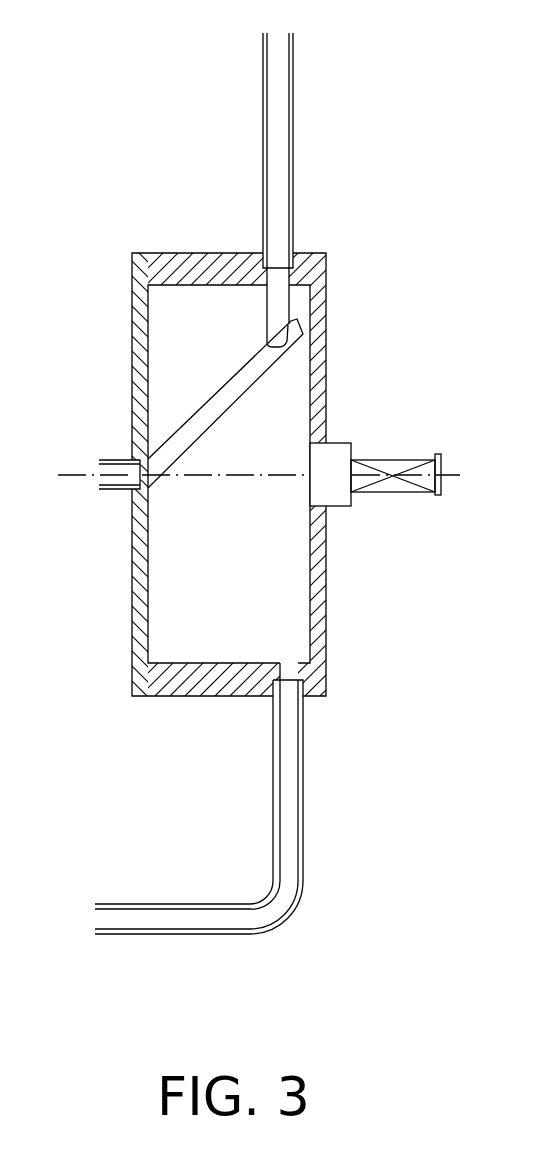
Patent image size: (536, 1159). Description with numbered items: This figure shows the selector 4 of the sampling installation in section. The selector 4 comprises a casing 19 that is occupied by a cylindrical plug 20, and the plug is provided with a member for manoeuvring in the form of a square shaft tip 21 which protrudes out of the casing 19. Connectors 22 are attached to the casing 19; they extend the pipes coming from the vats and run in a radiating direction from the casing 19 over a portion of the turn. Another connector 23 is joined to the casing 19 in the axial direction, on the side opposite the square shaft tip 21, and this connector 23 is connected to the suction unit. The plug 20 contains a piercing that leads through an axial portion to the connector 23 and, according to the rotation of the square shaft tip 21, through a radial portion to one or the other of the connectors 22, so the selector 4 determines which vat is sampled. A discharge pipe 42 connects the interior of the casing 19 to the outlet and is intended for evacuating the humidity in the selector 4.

The selector 4 is at (383, 261).
The casing 19 is at (320, 368).
The cylindrical plug 20 is at (162, 358).
The square shaft tip 21 is at (398, 485).
The connectors 22 is at (272, 155).
The connector 23 is at (118, 480).
The discharge pipe 42 is at (292, 830).